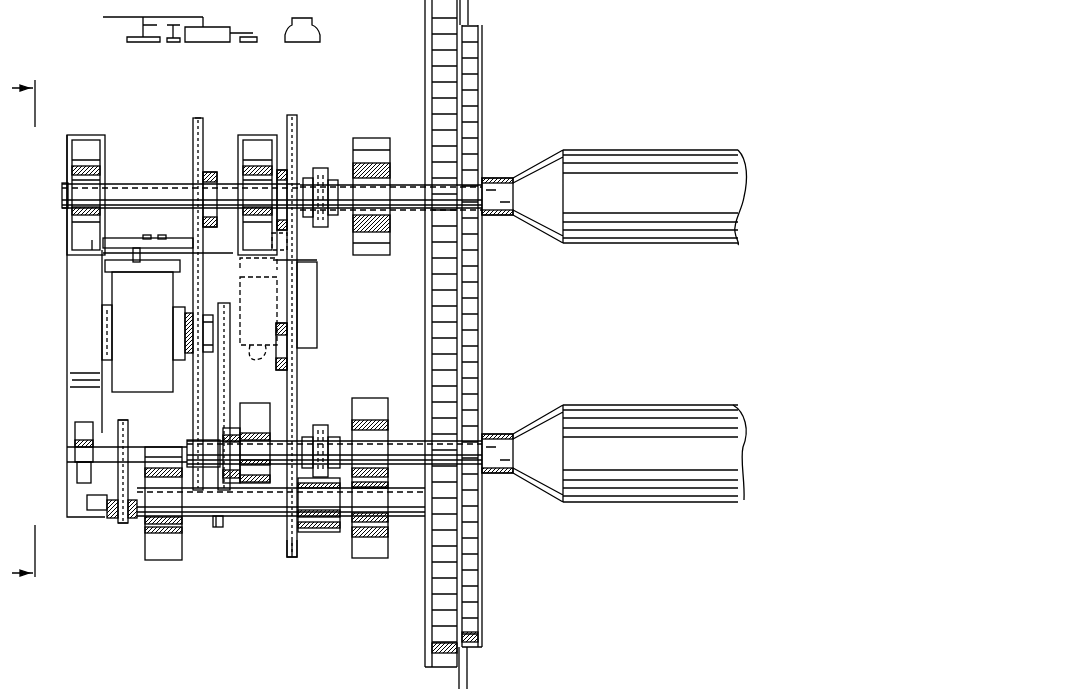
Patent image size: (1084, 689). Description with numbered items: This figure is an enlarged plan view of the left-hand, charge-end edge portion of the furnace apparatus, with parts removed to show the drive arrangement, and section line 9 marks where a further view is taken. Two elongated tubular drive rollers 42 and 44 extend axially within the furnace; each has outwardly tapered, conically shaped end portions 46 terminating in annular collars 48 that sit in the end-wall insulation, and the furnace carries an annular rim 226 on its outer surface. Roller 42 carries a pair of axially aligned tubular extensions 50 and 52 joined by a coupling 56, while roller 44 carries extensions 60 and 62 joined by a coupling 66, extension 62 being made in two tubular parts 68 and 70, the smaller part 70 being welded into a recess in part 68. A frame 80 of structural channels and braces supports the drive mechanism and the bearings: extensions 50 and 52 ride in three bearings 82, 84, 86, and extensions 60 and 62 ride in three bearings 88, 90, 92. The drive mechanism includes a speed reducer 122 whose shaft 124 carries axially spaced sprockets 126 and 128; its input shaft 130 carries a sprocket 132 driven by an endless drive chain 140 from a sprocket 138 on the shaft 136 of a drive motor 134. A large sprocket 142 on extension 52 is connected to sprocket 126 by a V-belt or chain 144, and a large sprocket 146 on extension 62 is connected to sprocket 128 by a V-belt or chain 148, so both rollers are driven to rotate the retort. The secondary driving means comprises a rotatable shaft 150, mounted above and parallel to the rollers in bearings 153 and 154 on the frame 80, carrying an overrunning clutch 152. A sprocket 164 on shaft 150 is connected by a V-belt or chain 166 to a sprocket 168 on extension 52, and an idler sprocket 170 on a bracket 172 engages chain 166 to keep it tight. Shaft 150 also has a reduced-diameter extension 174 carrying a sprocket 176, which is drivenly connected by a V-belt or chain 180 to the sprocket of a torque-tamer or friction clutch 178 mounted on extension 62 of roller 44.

The section line 9- 9 is at (35, 333).
The tubular drive roll 42 is at (737, 237).
The tubular drive roll 44 is at (742, 413).
The end portion 46 is at (543, 233).
The annular collar 48 is at (495, 182).
The tubular extension 50 is at (413, 212).
The tubular extension 52 is at (133, 187).
The coupling 56 is at (320, 173).
The tubular extension 60 is at (407, 445).
The tubular extension 62 is at (186, 442).
The coupling 66 is at (318, 430).
The tubular part 68 is at (205, 437).
The tubular part 70 is at (137, 447).
The frame 80 is at (63, 365).
The bearing 82 is at (383, 176).
The bearing 84 is at (252, 153).
The bearing 86 is at (88, 157).
The bearing 88 is at (360, 412).
The bearing 90 is at (248, 410).
The bearing 92 is at (82, 430).
The speed reducer 122 is at (112, 287).
The shaft 124 is at (192, 357).
The sprocket 126 is at (185, 307).
The sprocket 128 is at (217, 298).
The input shaft 130 is at (145, 238).
The sprocket 132 is at (168, 233).
The drive motor 134 is at (310, 302).
The shaft 136 is at (293, 238).
The sprocket 138 is at (302, 260).
The endless drive chain 140 is at (248, 270).
The large sprocket 142 is at (193, 140).
The V-belt or chain 144 is at (197, 120).
The large sprocket 146 is at (213, 518).
The V-belt or chain 148 is at (220, 522).
The rotatable shaft 150 is at (407, 512).
The overrunning clutch 152 is at (317, 530).
The bearing 153 is at (372, 552).
The bearing 154 is at (162, 550).
The sprocket 164 is at (287, 553).
The V-belt or chain 166 is at (293, 553).
The sprocket 168 is at (288, 127).
The idler sprocket 170 is at (288, 368).
The bracket 172 is at (253, 343).
The extension 174 is at (86, 500).
The sprocket 176 is at (115, 523).
The friction clutch 178 is at (117, 420).
The V-belt or chain 180 is at (127, 525).
The annular rim 226 is at (425, 637).